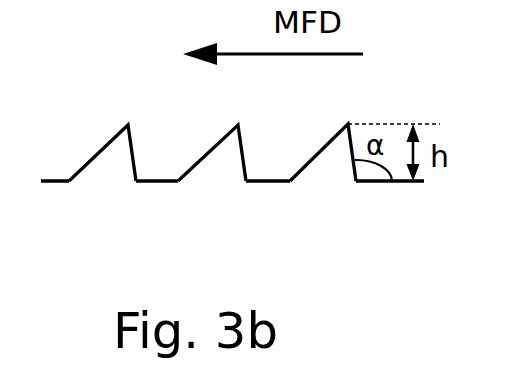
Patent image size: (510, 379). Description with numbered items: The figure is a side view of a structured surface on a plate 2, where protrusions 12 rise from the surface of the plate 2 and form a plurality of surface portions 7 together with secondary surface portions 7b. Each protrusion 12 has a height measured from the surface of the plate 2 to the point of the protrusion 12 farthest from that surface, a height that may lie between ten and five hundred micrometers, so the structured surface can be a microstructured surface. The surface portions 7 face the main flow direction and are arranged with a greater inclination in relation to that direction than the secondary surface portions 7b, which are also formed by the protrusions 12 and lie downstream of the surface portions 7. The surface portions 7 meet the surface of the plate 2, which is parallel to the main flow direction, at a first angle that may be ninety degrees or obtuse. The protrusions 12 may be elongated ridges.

The surface portion 7 is at (244, 134).
The secondary surface portion 7b is at (323, 142).
The protrusion 12 is at (108, 165).
The plate 2 is at (400, 182).